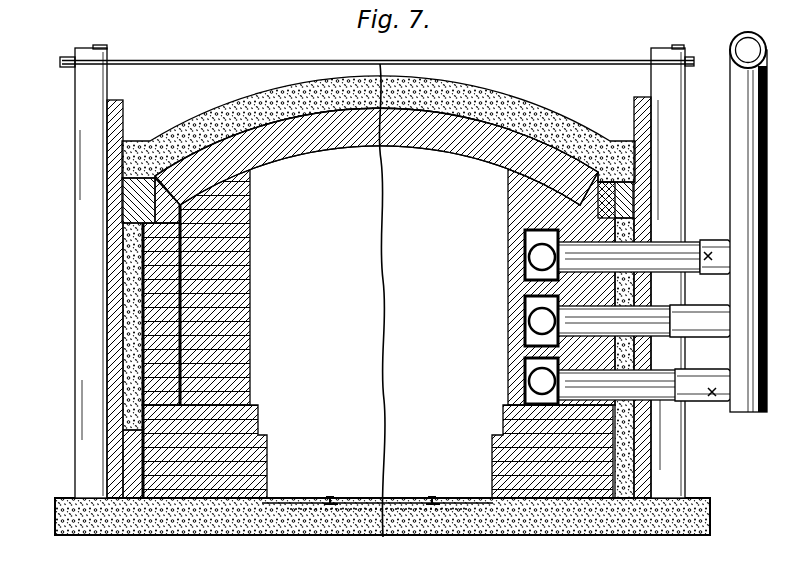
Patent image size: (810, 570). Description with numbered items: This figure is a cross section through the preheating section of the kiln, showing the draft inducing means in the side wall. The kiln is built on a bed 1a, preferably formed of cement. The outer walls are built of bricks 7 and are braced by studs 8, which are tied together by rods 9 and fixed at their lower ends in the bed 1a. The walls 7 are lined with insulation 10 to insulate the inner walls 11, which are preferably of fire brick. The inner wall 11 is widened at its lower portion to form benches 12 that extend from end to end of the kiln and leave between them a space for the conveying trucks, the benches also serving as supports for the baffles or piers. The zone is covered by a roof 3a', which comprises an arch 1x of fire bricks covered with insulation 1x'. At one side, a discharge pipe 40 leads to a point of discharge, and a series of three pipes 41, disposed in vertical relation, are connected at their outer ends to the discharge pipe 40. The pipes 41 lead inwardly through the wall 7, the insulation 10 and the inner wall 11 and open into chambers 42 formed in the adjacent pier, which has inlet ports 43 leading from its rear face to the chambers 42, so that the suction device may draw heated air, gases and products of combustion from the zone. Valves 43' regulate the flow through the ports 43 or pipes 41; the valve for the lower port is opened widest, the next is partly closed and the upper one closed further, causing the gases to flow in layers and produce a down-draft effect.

The bed 1a is at (163, 537).
The arch 1x is at (376, 156).
The insulation 1x' is at (378, 129).
The roof 3a' is at (416, 300).
The bricks 7 is at (645, 458).
The studs 8 is at (73, 375).
The rods 9 is at (193, 65).
The insulation 10 is at (133, 290).
The inner walls 11 is at (150, 367).
The benches 12 is at (258, 406).
The discharge pipe 40 is at (760, 148).
The pipes 41 is at (722, 338).
The chambers 42 is at (525, 246).
The inlet ports 43 is at (561, 321).
The valves 43' is at (711, 324).